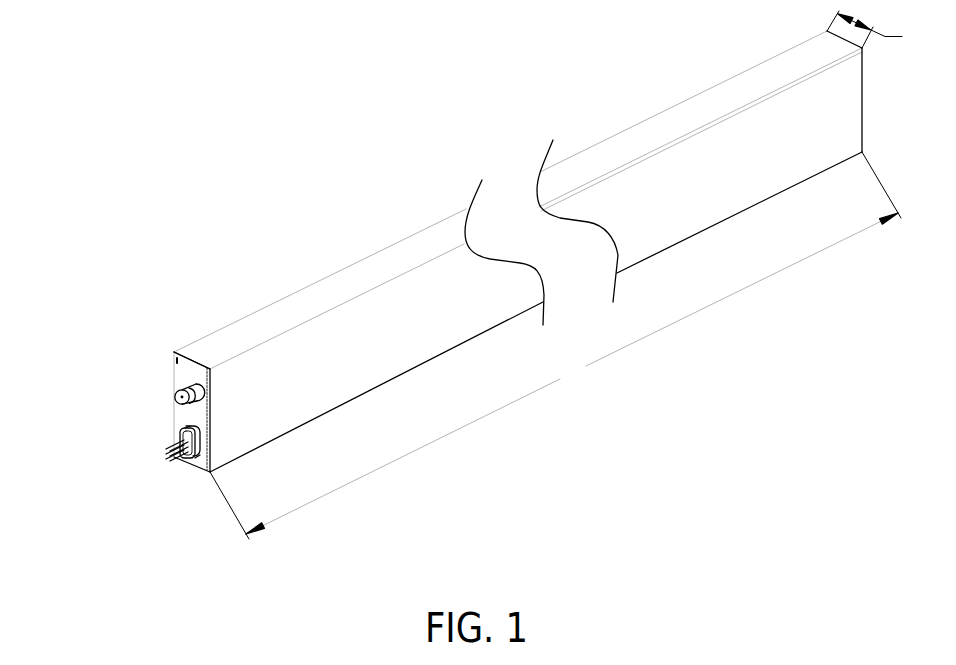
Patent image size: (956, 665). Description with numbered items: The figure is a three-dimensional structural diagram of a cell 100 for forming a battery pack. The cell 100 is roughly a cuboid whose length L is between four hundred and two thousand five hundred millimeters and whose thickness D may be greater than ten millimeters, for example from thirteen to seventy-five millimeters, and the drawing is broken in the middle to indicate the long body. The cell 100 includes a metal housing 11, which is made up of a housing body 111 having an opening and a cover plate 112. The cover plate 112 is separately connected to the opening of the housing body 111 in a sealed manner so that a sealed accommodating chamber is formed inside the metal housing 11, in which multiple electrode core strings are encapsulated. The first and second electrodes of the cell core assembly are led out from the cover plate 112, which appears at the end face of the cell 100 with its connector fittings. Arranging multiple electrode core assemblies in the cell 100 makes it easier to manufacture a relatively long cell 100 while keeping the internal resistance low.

The cell 100 is at (297, 146).
The metal housing 11 is at (80, 392).
The housing body 111 is at (233, 333).
The cover plate 112 is at (182, 415).